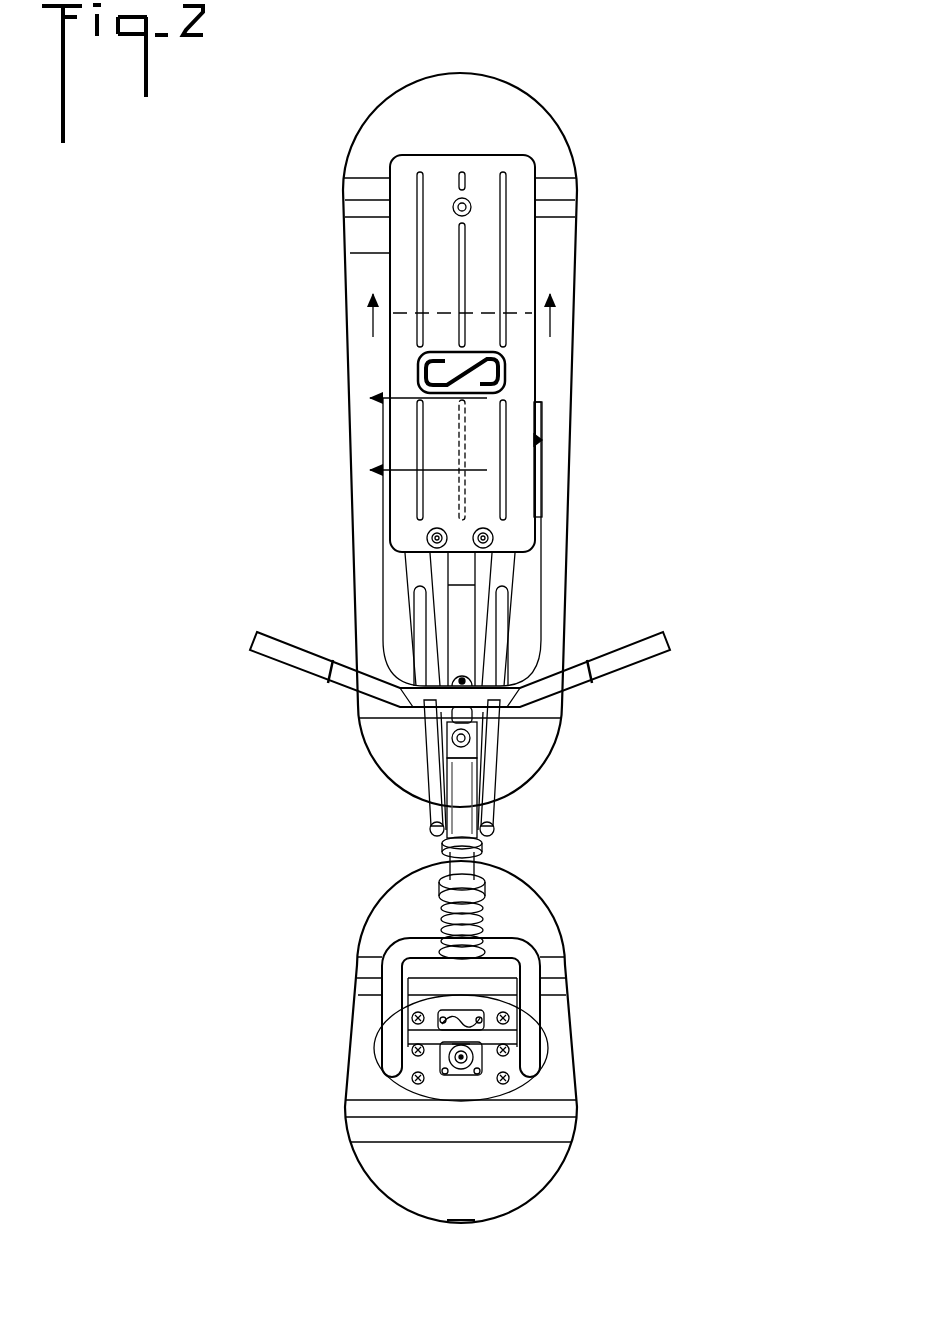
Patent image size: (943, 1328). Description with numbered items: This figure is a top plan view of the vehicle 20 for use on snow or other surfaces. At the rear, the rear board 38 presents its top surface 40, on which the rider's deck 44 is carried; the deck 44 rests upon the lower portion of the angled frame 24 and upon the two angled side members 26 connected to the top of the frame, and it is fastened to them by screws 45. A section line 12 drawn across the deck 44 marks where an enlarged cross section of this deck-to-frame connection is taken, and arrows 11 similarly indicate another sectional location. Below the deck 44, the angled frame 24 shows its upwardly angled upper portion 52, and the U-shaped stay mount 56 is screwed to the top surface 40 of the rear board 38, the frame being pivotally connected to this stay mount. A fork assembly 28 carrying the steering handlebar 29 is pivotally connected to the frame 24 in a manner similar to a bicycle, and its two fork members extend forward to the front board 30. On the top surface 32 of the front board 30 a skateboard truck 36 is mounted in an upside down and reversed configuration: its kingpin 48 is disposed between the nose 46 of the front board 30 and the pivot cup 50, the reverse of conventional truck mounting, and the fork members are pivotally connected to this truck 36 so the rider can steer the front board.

The vehicle 20 is at (677, 112).
The rear board 38 is at (523, 76).
The top surface of rear board 40 is at (372, 238).
The section line 12- 12 is at (460, 297).
The deck 44 is at (517, 378).
The screws 45 is at (470, 209).
The section line 11 is at (401, 434).
The angled frame 24 is at (477, 575).
The U-shaped stay mount 56 is at (395, 589).
The upwardly angled upper portion 52 is at (457, 635).
The angled side members 26 is at (423, 612).
The steering handlebar 29 is at (358, 695).
The fork assembly 28 is at (437, 880).
The front board 30 is at (374, 892).
The skateboard truck 36 is at (472, 1003).
The pivot cup 50 is at (445, 1024).
The kingpin 48 is at (483, 1067).
The top surface of front board 32 is at (478, 1187).
The nose 46 is at (466, 1225).